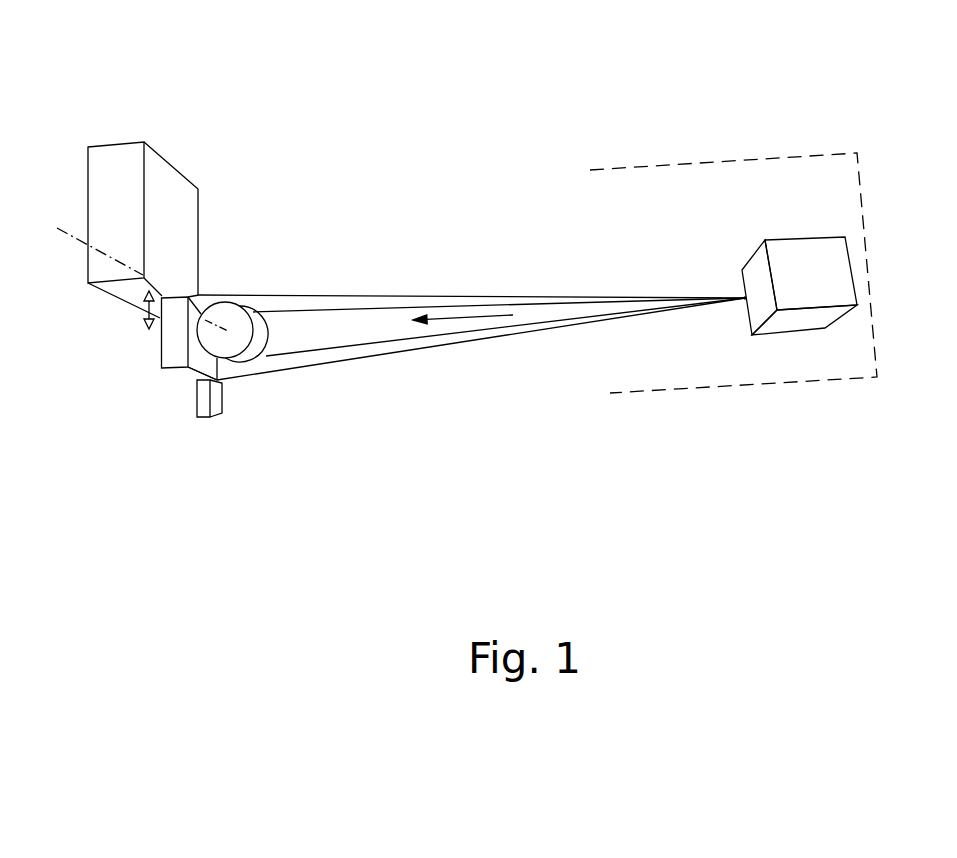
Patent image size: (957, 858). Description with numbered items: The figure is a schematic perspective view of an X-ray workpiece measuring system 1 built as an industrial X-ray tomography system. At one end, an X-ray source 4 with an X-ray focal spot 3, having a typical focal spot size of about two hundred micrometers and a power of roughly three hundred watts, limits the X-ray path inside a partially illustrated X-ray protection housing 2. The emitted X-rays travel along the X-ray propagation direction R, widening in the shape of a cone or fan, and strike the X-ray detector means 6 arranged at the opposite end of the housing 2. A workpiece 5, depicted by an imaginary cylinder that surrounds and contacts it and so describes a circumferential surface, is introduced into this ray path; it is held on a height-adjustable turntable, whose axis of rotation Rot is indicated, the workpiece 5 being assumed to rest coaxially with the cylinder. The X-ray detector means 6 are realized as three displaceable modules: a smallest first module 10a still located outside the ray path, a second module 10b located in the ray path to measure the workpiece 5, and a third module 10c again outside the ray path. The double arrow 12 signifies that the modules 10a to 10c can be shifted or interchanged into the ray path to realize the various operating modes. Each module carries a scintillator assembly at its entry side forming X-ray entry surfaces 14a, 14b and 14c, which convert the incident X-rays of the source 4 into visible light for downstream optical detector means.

The X-ray workpiece measuring system 1 is at (356, 168).
The X-ray protection housing 2 is at (720, 385).
The X-ray focal spot 3 is at (745, 298).
The X-ray source 4 is at (822, 290).
The workpiece 5 is at (258, 348).
The X-ray detector means 6 is at (98, 370).
The first module 10a is at (208, 428).
The second module 10b is at (155, 349).
The third module 10c is at (123, 134).
The double arrow 12 is at (145, 303).
The X-ray entry surface 14a is at (218, 398).
The X-ray entry surface 14b is at (195, 358).
The X-ray entry surface 14c is at (173, 205).
The X-ray propagation direction R is at (467, 317).
The axis of rotation Rot is at (199, 298).